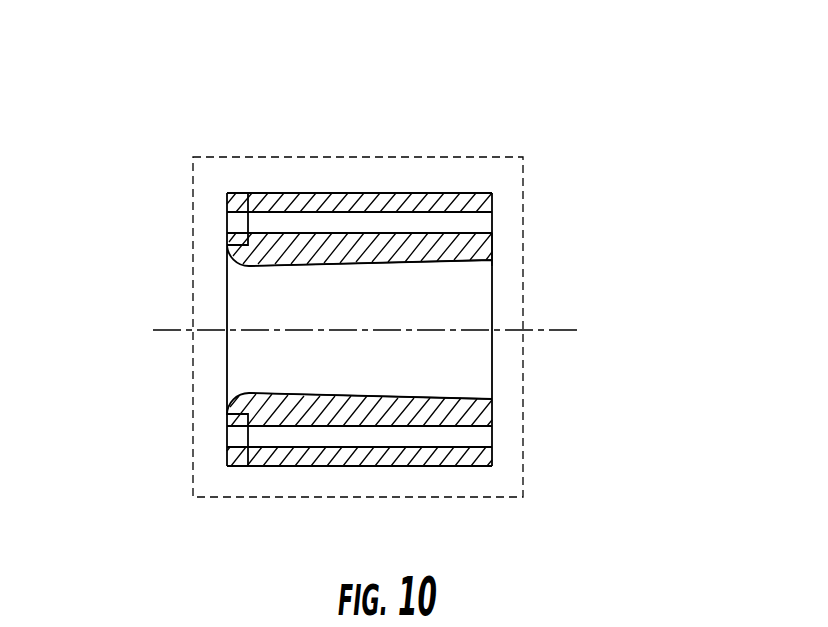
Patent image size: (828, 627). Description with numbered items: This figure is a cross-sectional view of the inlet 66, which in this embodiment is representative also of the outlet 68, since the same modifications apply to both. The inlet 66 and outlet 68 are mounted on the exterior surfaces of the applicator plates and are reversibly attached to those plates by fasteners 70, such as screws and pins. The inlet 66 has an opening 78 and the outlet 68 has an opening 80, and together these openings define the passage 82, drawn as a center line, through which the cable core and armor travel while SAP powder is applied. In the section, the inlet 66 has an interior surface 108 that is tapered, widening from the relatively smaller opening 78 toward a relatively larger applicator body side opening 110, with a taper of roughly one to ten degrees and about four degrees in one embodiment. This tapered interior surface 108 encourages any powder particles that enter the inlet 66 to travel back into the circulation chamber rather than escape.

The inlet 66 is at (352, 272).
The outlet 68 is at (269, 184).
The fasteners 70 is at (408, 226).
The opening 78 is at (270, 429).
The opening 80 is at (250, 393).
The passage 82 is at (185, 328).
The interior surface 108 is at (430, 259).
The applicator body side opening 110 is at (492, 258).